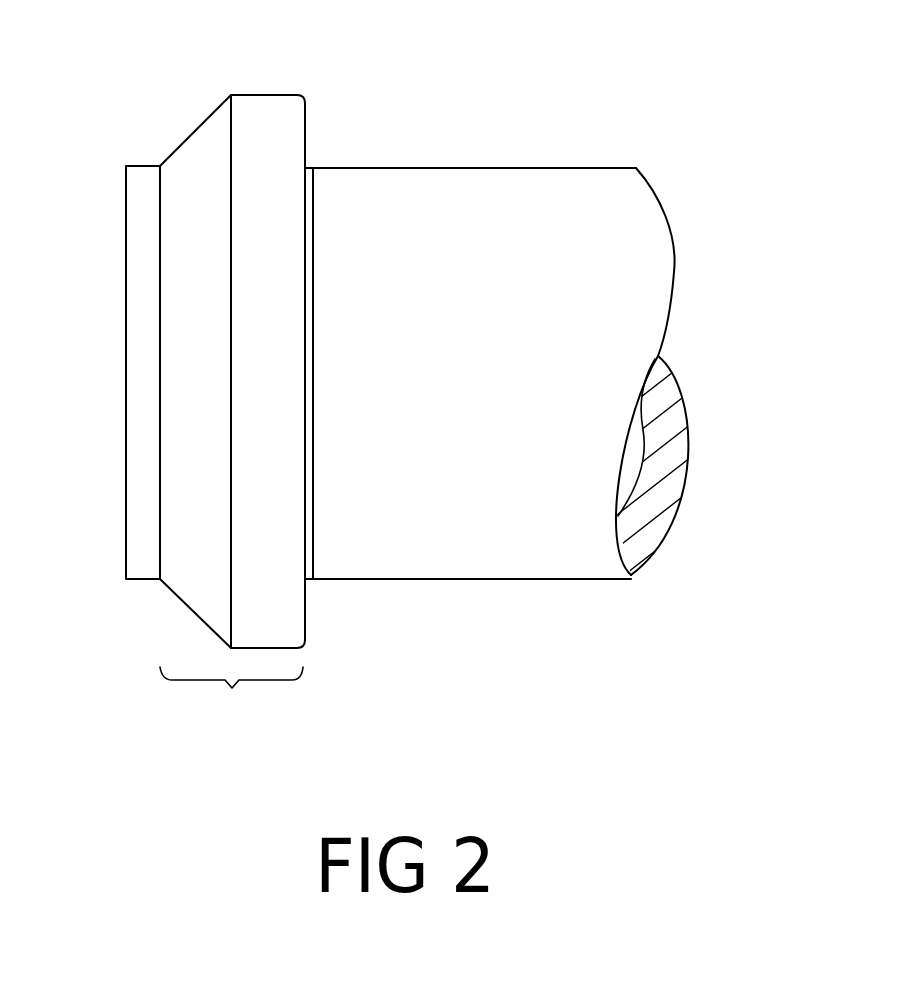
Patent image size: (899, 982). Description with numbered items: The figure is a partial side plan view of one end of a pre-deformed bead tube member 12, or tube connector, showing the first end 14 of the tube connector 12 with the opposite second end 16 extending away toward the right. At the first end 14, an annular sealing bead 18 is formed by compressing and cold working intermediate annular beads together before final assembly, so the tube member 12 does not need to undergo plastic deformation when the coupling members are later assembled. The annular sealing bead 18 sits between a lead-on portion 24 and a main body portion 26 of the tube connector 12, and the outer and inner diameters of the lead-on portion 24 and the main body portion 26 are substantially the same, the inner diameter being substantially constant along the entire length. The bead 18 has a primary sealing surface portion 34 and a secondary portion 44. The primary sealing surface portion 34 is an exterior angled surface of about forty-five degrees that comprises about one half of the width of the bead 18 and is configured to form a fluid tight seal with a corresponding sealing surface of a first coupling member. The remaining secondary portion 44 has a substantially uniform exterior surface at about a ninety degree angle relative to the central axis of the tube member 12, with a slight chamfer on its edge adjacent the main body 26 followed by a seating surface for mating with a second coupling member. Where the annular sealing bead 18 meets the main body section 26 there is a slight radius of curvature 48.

The pre-deformed bead tube member 12 is at (407, 370).
The first end 14 is at (162, 370).
The second end 16 is at (531, 364).
The annular sealing bead 18 is at (231, 694).
The lead-on portion 24 is at (142, 177).
The main body portion 26 is at (302, 98).
The primary sealing surface portion 34 is at (198, 145).
The secondary portion 44 is at (264, 108).
The radius of curvature 48 is at (305, 167).